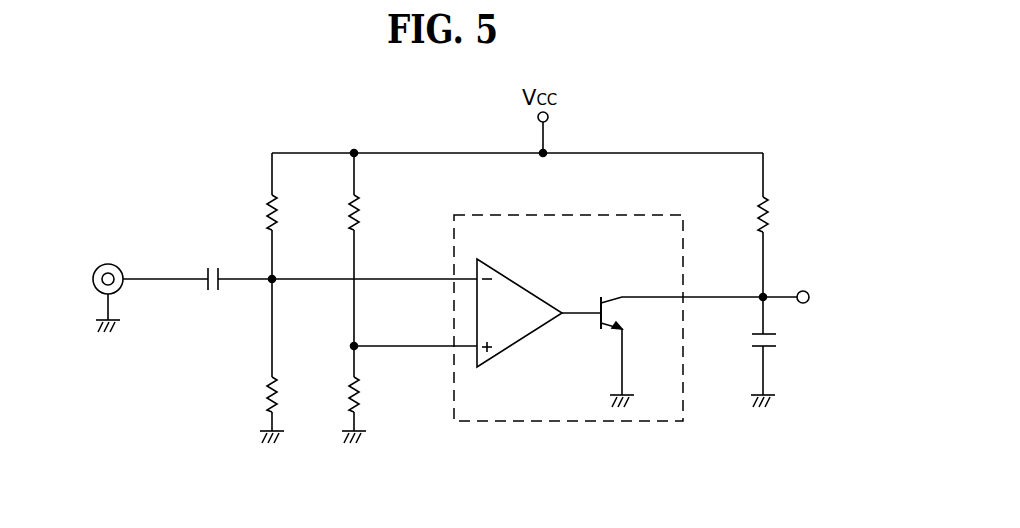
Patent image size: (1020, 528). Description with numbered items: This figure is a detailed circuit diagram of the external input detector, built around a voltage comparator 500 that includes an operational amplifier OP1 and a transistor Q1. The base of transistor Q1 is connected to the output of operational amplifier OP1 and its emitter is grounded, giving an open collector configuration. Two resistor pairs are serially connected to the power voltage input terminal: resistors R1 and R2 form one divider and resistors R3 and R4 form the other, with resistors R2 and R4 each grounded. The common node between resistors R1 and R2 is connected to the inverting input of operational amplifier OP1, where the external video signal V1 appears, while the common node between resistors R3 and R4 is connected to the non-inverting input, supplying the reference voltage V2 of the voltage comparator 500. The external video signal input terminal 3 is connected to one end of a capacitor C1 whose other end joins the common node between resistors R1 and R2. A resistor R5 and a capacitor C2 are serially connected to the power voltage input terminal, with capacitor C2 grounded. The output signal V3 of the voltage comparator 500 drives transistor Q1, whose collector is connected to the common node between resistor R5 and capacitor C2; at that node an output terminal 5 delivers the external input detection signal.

The external video signal input terminal 3 is at (93, 281).
The output terminal 5 is at (809, 300).
The voltage comparator 500 is at (582, 214).
The resistor R1 is at (251, 216).
The resistor R2 is at (288, 361).
The resistor R3 is at (371, 249).
The resistor R4 is at (370, 394).
The resistor R5 is at (745, 225).
The capacitor C1 is at (214, 295).
The capacitor C2 is at (747, 352).
The operational amplifier OP1 is at (519, 313).
The transistor Q1 is at (642, 352).
The external video signal V1 is at (316, 275).
The reference voltage V2 is at (357, 345).
The output signal V3 is at (582, 311).